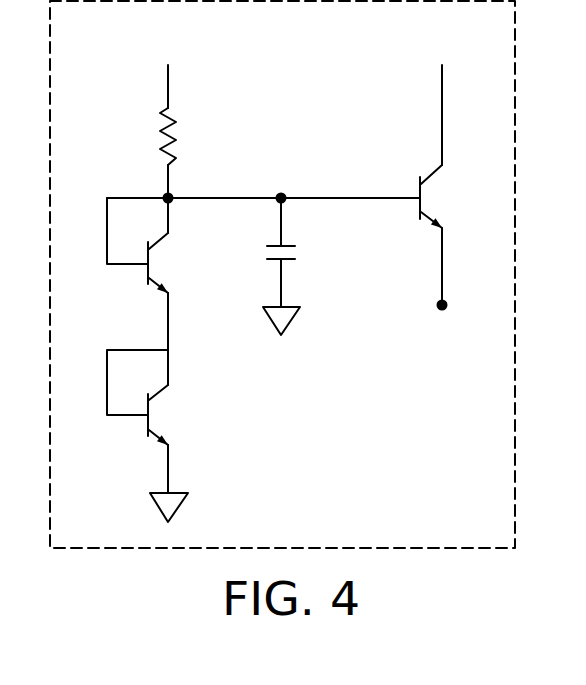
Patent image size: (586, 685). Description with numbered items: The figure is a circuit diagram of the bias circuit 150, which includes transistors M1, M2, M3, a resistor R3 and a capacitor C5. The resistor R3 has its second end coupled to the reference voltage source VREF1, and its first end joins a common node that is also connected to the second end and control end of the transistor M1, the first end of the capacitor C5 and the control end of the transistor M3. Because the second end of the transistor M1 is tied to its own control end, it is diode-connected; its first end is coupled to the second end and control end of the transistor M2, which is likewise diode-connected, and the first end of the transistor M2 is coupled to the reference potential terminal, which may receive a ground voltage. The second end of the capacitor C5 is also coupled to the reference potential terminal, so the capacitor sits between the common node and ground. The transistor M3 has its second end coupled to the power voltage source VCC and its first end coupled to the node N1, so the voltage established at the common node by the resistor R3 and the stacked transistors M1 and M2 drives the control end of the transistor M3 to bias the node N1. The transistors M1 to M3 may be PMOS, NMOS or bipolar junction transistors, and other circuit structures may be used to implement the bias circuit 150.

The bias circuit 150 is at (282, 274).
The reference voltage source VREF1 is at (171, 68).
The resistor R3 is at (189, 170).
The transistor M1 is at (154, 274).
The transistor M2 is at (155, 436).
The capacitor C5 is at (298, 266).
The power voltage source VCC is at (442, 97).
The transistor M3 is at (449, 198).
The node N1 is at (440, 292).